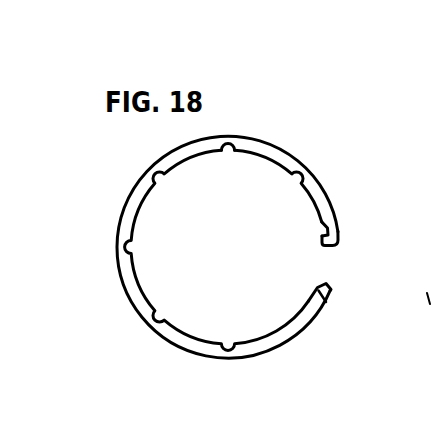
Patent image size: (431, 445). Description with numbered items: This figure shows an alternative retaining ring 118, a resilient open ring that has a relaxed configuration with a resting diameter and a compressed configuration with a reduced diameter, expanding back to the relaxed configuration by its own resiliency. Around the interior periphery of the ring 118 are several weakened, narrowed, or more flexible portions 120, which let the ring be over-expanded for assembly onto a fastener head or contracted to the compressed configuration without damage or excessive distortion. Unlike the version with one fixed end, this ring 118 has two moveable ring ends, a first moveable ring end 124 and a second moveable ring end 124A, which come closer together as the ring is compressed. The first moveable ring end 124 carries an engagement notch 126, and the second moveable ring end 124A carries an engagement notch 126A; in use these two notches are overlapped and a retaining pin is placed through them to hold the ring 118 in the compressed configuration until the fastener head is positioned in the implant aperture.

The retaining ring 118 is at (121, 300).
The weakened, narrowed, or more flexible portions 120 is at (243, 147).
The moveable ring end 124 is at (352, 246).
The moveable ring end 124A is at (342, 281).
The engagement notch 126 is at (318, 226).
The engagement notch 126A is at (303, 293).